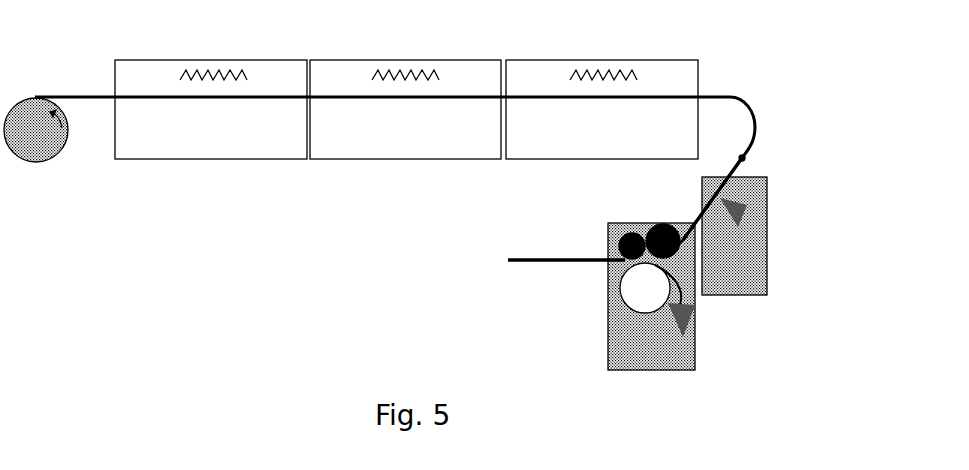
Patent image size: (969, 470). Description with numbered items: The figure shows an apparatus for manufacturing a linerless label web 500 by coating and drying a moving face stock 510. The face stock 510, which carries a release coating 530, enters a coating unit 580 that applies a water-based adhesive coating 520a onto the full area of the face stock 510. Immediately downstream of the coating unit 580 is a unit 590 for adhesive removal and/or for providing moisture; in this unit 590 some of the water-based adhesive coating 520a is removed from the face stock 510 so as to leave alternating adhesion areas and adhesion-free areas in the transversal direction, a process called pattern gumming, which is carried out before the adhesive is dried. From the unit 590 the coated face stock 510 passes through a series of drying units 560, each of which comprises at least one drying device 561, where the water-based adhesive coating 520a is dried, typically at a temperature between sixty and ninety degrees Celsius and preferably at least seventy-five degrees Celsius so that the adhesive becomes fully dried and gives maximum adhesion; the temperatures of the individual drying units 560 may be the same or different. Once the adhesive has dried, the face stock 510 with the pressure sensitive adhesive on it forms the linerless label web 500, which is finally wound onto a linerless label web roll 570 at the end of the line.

The linerless label web 500 is at (85, 95).
The face stock 510 is at (523, 262).
The water-based adhesive coating 520a is at (760, 137).
The release coating 530 is at (700, 237).
The drying unit 560 is at (406, 109).
The drying device 561 is at (221, 71).
The linerless label web roll 570 is at (42, 145).
The coating unit 580 is at (651, 296).
The unit 590 is at (734, 236).